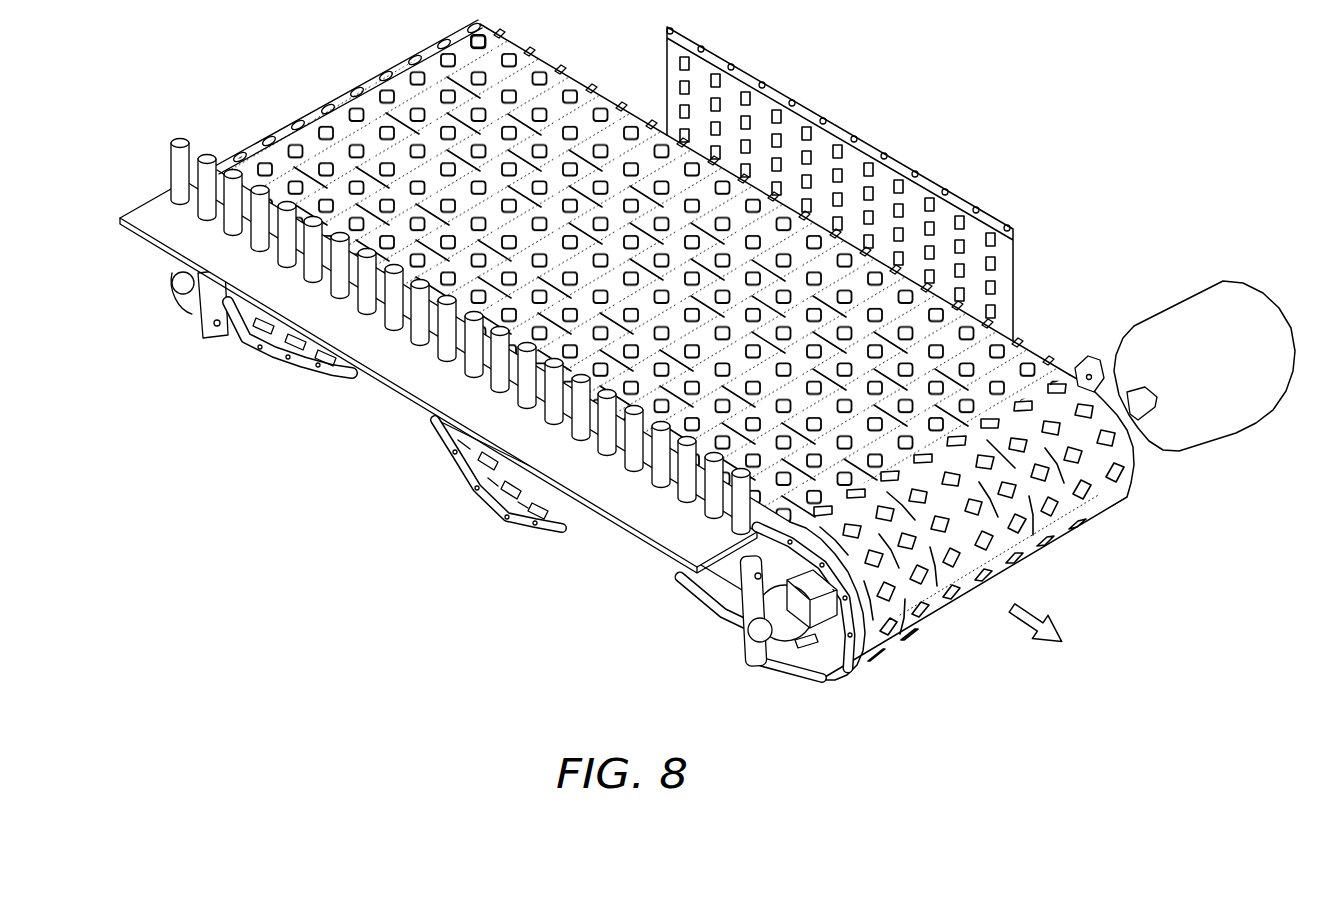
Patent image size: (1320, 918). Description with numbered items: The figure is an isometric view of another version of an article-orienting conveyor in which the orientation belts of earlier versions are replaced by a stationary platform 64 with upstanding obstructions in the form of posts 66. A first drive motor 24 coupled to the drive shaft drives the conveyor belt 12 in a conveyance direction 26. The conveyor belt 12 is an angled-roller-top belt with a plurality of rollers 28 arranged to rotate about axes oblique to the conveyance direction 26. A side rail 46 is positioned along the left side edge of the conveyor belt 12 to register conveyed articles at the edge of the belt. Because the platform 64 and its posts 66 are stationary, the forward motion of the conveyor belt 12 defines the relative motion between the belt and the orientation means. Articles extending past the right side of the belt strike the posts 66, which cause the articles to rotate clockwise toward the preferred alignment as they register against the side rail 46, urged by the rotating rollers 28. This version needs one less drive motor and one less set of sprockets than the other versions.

The conveyor belt 12 is at (556, 72).
The first drive motor 24 is at (1271, 308).
The conveyance direction 26 is at (1040, 612).
The rollers 28 is at (483, 42).
The side rail 46 is at (934, 190).
The stationary platform 64 is at (650, 527).
The posts 66 is at (178, 176).